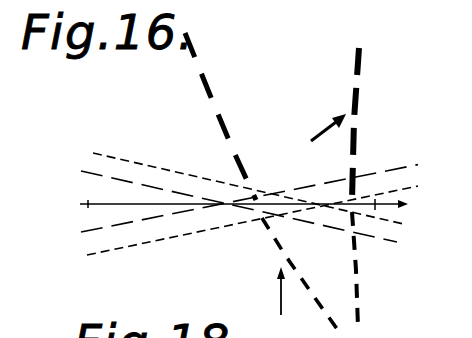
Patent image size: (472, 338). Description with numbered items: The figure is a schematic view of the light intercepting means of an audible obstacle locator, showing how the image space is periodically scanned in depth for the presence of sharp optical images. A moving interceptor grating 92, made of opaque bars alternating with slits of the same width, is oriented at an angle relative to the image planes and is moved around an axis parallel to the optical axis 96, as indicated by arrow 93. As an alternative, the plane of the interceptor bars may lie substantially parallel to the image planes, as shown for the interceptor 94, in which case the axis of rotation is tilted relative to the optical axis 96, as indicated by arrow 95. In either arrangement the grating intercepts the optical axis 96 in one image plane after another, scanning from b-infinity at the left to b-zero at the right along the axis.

The interceptor grating 92 is at (208, 73).
The arrow 93 is at (270, 295).
The interceptor 94 is at (357, 150).
The arrow 95 is at (317, 128).
The optical axis 96 is at (262, 202).